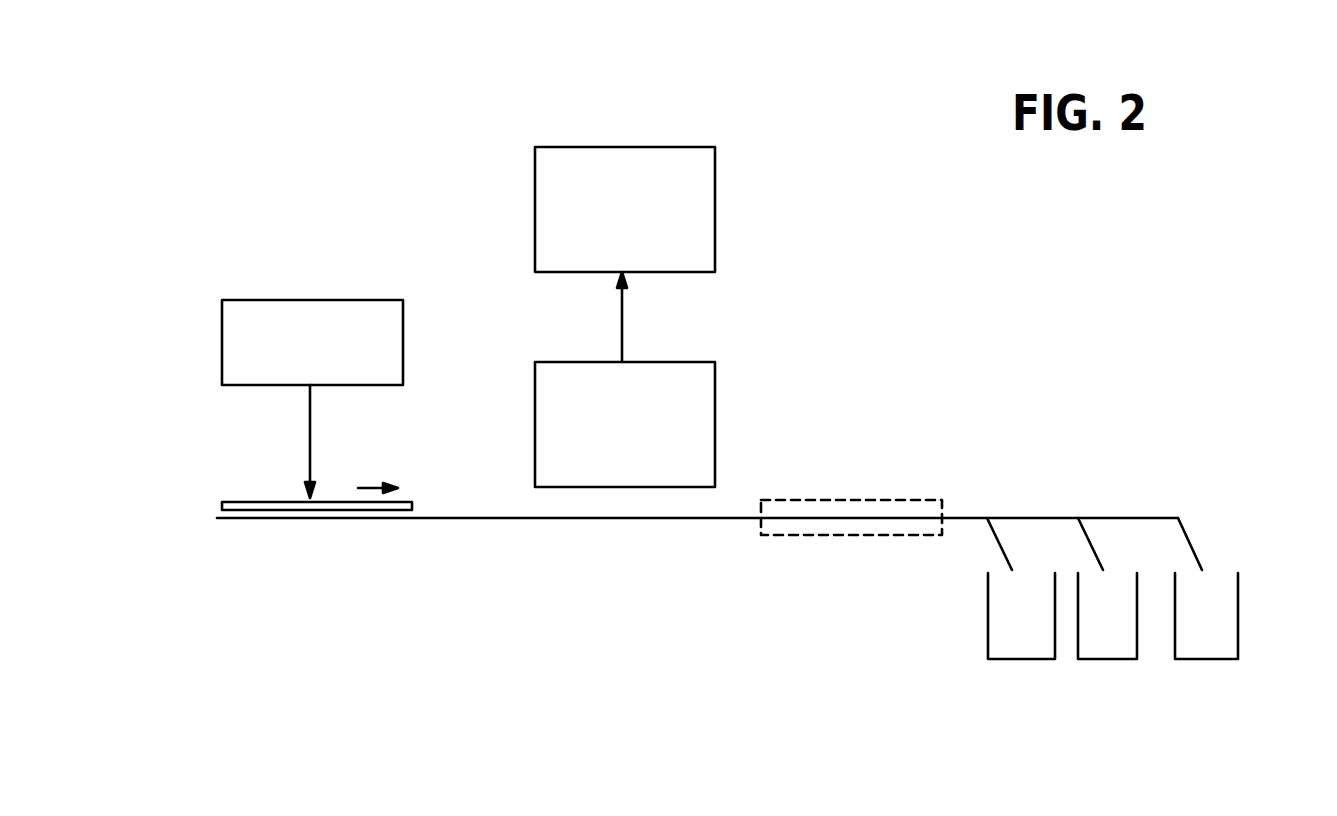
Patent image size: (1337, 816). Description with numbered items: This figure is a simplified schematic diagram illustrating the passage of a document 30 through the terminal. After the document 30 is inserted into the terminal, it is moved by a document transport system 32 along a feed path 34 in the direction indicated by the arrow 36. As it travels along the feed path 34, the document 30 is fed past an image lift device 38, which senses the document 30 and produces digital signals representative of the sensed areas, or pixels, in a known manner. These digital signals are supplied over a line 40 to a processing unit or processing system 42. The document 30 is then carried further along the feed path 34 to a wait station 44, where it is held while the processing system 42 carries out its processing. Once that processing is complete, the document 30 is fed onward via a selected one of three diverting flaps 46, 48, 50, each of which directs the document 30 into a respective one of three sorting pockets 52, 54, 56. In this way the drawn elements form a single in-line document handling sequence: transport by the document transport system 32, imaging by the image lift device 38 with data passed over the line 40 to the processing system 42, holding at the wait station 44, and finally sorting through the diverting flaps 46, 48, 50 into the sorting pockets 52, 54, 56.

The document 30 is at (242, 503).
The document transport system 32 is at (353, 302).
The feed path 34 is at (503, 519).
The arrow 36 is at (368, 487).
The image lift device 38 is at (707, 373).
The line 40 is at (622, 324).
The processing system 42 is at (707, 152).
The wait station 44 is at (925, 500).
The diverting flap 46 is at (1000, 527).
The diverting flap 48 is at (1090, 527).
The diverting flap 50 is at (1188, 538).
The sorting pocket 52 is at (986, 641).
The sorting pocket 54 is at (1110, 660).
The sorting pocket 56 is at (1227, 660).